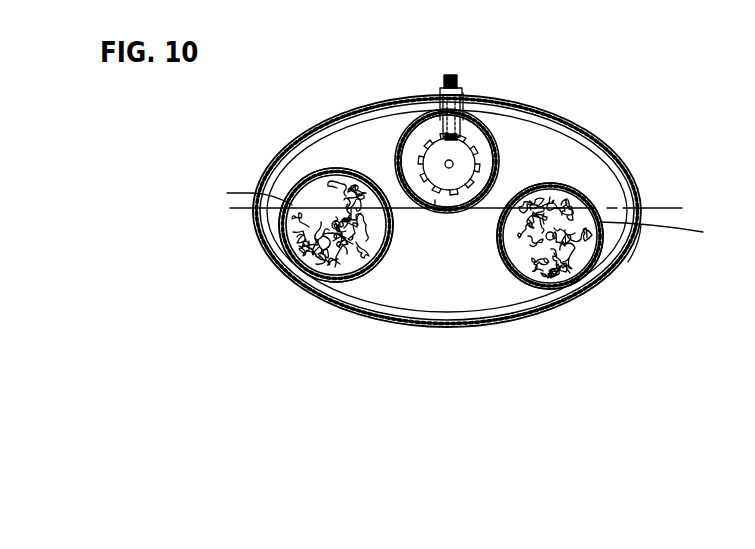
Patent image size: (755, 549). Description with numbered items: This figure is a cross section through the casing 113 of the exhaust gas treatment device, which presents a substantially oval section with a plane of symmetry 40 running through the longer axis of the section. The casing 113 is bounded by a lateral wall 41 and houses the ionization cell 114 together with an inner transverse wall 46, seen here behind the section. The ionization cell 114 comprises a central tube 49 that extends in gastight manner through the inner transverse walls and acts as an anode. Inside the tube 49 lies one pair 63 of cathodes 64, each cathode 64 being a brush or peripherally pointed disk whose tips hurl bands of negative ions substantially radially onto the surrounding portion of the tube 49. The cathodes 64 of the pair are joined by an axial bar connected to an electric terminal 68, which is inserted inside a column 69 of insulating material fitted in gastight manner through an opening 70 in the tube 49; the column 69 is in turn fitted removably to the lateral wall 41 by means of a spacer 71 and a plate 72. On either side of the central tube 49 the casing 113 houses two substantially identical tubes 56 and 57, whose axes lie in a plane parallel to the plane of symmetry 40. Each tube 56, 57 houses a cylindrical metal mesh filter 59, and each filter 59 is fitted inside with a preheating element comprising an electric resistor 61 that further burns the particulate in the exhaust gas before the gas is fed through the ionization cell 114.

The plane of symmetry 40 is at (667, 207).
The lateral wall 41 is at (637, 233).
The inner transverse wall 46 is at (512, 297).
The central tube 49 is at (460, 212).
The tube 56 is at (669, 231).
The tube 57 is at (241, 199).
The cylindrical metal mesh filter 59 is at (337, 252).
The electric resistor 61 is at (288, 282).
The pair of cathodes 63 is at (478, 155).
The cathode 64 is at (447, 163).
The electric terminal 68 is at (452, 74).
The column 69 is at (440, 108).
The opening 70 is at (435, 212).
The spacer 71 is at (466, 104).
The plate 72 is at (464, 93).
The casing 113 is at (608, 140).
The ionization cell 114 is at (488, 128).